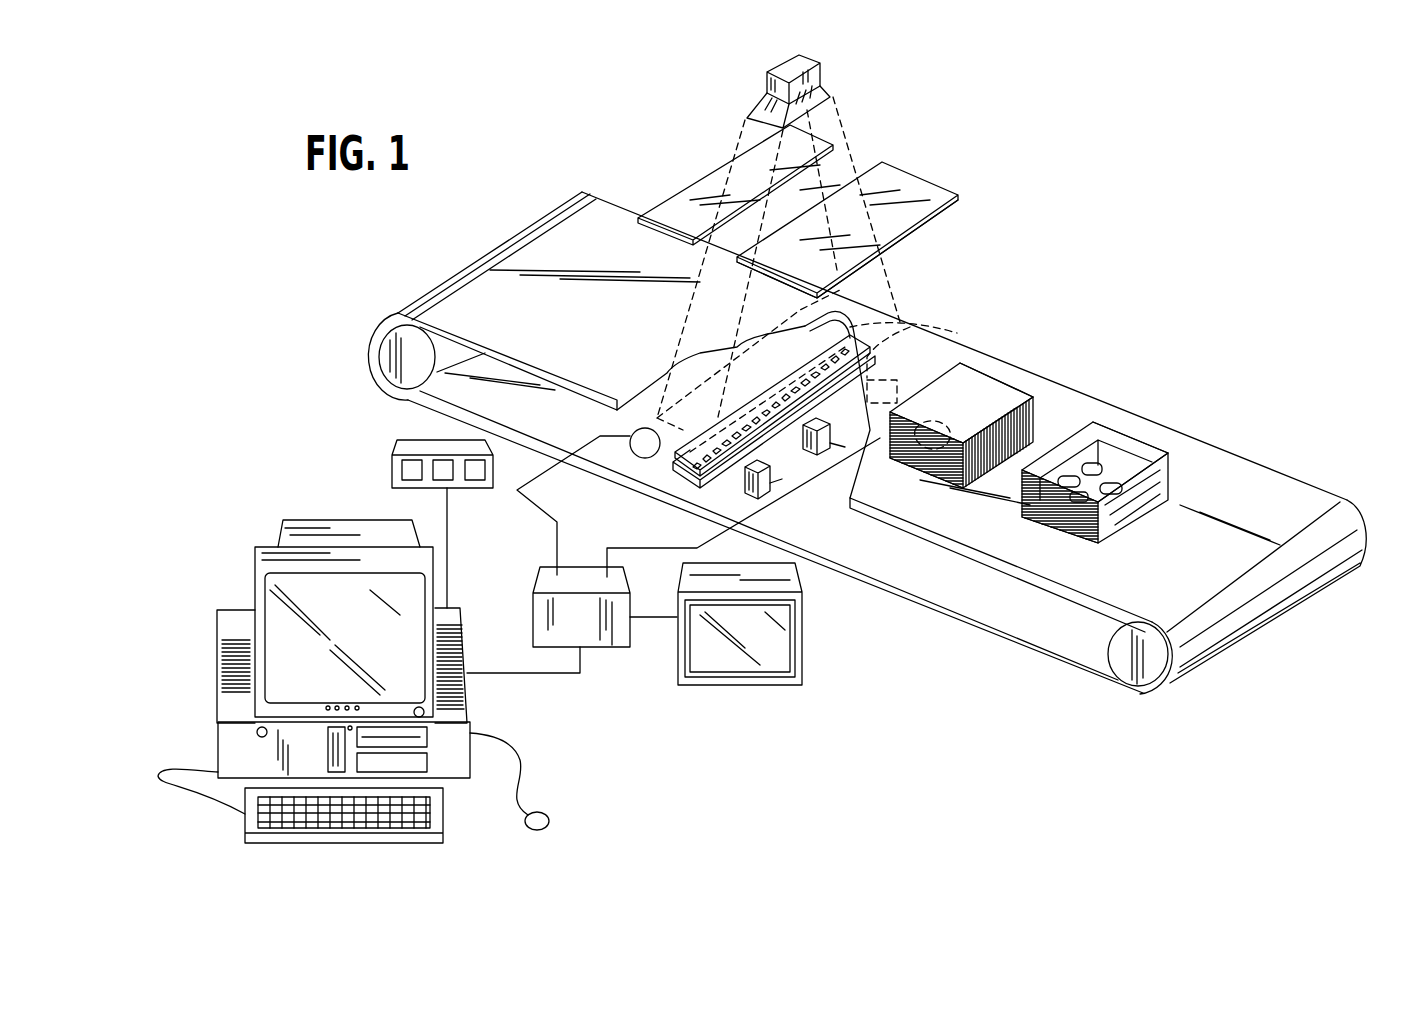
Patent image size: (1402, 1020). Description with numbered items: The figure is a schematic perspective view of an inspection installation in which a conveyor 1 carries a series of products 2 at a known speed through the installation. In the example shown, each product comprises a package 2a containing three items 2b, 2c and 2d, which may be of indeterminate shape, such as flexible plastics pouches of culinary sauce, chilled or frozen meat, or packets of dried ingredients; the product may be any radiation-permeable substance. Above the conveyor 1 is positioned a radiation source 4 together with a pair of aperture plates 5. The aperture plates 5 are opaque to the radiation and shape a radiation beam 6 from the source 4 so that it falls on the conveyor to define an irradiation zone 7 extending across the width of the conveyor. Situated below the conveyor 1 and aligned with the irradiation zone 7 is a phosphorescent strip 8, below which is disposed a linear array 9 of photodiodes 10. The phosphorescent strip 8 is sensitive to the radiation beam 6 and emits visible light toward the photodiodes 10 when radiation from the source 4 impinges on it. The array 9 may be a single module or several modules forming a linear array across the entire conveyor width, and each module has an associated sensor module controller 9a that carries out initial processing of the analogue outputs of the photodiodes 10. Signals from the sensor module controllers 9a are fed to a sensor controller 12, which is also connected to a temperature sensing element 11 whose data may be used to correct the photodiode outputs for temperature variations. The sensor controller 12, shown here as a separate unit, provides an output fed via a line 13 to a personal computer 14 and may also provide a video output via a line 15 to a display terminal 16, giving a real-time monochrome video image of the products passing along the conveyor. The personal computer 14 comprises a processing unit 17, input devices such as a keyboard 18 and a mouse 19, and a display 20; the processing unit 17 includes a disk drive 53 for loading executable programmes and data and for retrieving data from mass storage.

The conveyor 1 is at (485, 297).
The products 2 is at (973, 362).
The package 2a is at (1040, 390).
The item 2b is at (1073, 407).
The item 2c is at (947, 487).
The item 2d is at (990, 398).
The radiation source 4 is at (815, 73).
The aperture plates 5 is at (672, 212).
The radiation beam 6 is at (884, 268).
The irradiation zone 7 is at (852, 318).
The phosphorescent strip 8 is at (737, 346).
The linear array of photodiodes 9 is at (773, 433).
The sensor module controller 9a is at (845, 447).
The photodiodes 10 is at (768, 392).
The temperature sensing element 11 is at (635, 450).
The sensor controller 12 is at (538, 577).
The line 13 is at (567, 673).
The personal computer 14 is at (178, 490).
The line 15 is at (640, 618).
The display terminal 16 is at (750, 685).
The processing unit 17 is at (232, 747).
The keyboard 18 is at (243, 822).
The mouse 19 is at (548, 820).
The display 20 is at (283, 593).
The disk drive 53 is at (490, 733).